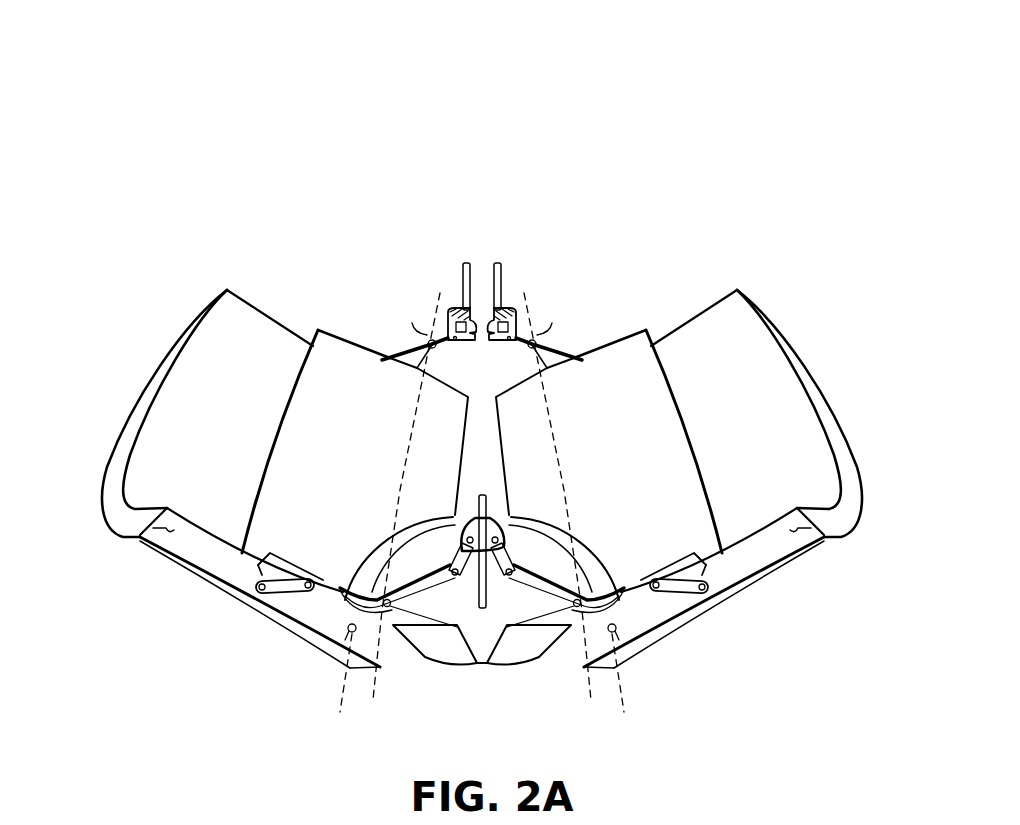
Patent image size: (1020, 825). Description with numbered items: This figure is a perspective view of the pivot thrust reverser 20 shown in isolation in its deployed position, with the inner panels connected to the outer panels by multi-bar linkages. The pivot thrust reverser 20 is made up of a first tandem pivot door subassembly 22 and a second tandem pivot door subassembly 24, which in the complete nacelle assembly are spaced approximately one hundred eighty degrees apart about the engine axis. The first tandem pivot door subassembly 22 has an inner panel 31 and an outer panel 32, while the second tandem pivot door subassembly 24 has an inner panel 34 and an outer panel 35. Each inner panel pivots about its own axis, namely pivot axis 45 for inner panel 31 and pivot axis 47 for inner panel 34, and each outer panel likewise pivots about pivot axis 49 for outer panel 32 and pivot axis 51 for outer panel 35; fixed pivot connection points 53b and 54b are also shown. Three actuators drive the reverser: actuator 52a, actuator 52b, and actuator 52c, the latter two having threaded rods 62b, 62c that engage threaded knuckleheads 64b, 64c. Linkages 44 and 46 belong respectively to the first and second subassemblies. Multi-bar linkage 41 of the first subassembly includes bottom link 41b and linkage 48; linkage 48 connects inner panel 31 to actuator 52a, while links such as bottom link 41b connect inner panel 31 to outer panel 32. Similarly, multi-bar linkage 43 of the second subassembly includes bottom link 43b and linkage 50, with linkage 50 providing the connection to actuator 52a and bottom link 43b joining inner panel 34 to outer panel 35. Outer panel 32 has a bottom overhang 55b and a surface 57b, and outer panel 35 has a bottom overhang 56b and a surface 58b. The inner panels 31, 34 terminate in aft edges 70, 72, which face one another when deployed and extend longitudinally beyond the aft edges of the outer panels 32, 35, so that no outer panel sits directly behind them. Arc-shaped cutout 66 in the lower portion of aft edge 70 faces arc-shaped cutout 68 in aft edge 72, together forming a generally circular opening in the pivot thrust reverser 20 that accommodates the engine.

The pivot thrust reverser 20 is at (398, 140).
The first tandem pivot door subassembly 22 is at (704, 260).
The second tandem pivot door subassembly 24 is at (243, 260).
The inner panel 31 is at (622, 362).
The outer panel 32 is at (758, 358).
The inner panel 34 is at (345, 362).
The outer panel 35 is at (207, 358).
The multi-bar linkage 41 is at (606, 576).
The bottom link 41b is at (683, 588).
The multi-bar linkage 43 is at (352, 576).
The bottom link 43b is at (280, 590).
The linkage 44 is at (557, 345).
The pivot axis 45 is at (530, 310).
The linkage 46 is at (412, 323).
The pivot axis 47 is at (437, 308).
The linkage 48 is at (540, 583).
The pivot axis 49 is at (622, 693).
The linkage 50 is at (430, 580).
The pivot axis 51 is at (340, 693).
The actuator 52a is at (485, 640).
The actuator 52b is at (527, 258).
The actuator 52c is at (449, 258).
The fixed pivot connection point 53b is at (614, 632).
The fixed pivot connection point 54b is at (350, 632).
The bottom overhang 55b is at (790, 557).
The bottom overhang 56b is at (175, 557).
The surface 57b is at (801, 522).
The surface 58b is at (163, 522).
The threaded rod 62b is at (497, 262).
The threaded rod 62c is at (476, 262).
The threaded knucklehead 64b is at (490, 345).
The threaded knucklehead 64c is at (475, 345).
The cutout 66 is at (573, 545).
The cutout 68 is at (393, 550).
The aft edge 70 is at (509, 478).
The aft edge 72 is at (455, 478).